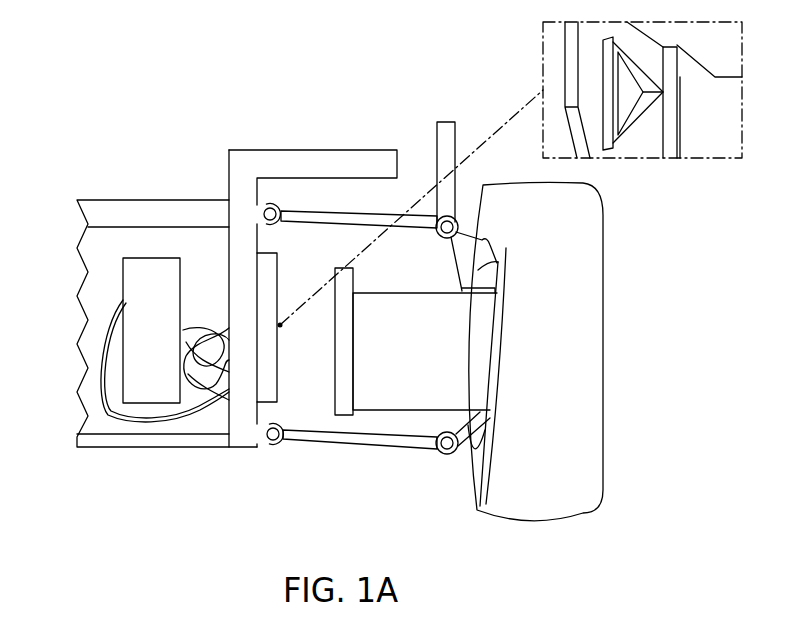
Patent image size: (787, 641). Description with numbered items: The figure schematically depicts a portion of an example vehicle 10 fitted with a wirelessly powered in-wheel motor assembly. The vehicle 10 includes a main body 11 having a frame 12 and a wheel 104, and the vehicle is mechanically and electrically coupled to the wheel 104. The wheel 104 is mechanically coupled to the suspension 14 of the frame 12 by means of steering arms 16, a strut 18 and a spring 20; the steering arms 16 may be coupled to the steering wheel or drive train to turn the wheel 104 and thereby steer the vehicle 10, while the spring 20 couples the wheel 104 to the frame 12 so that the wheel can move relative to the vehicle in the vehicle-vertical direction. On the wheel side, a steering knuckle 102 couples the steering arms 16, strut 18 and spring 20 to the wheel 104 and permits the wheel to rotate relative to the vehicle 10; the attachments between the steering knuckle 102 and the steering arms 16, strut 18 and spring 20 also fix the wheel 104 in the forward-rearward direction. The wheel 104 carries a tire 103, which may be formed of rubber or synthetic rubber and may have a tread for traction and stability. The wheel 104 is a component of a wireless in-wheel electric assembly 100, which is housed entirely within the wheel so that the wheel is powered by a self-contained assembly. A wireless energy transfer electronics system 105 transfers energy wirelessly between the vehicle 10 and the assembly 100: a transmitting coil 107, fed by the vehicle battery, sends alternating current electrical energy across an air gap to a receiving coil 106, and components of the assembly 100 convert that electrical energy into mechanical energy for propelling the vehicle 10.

The vehicle 10 is at (90, 138).
The main body 11 is at (135, 157).
The frame 12 is at (273, 149).
The suspension 14 is at (243, 449).
The steering arms 16 is at (321, 212).
The struts 18 is at (265, 213).
The springs 20 is at (450, 126).
The wireless in-wheel electric assembly 100 is at (513, 392).
The steering knuckle 102 is at (478, 270).
The tire 103 is at (603, 403).
The wheel 104 is at (405, 390).
The wireless energy transfer electronics system 105 is at (275, 452).
The receiving coil 106 is at (343, 416).
The transmitting coil 107 is at (278, 387).